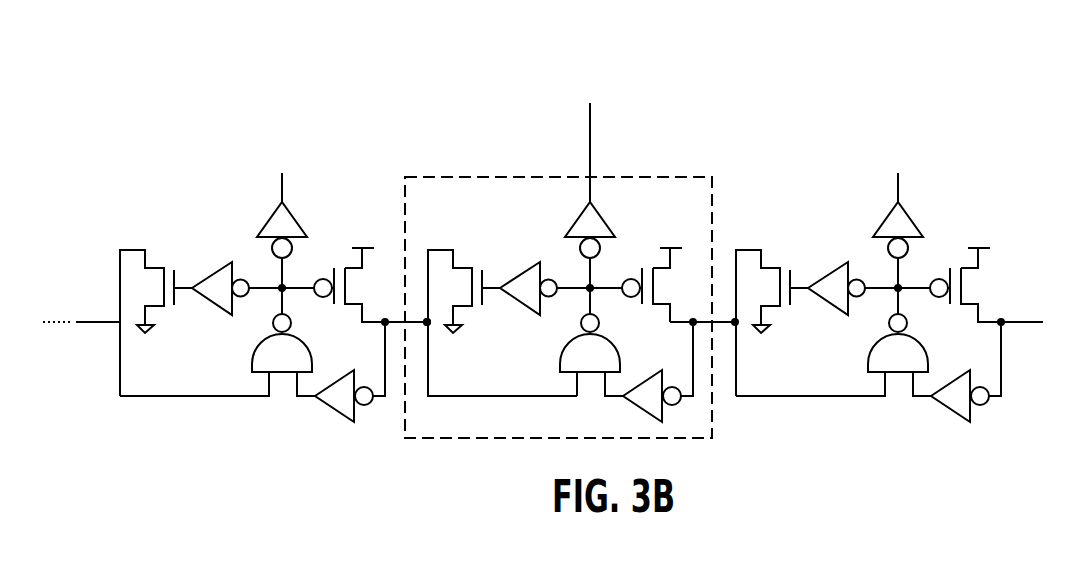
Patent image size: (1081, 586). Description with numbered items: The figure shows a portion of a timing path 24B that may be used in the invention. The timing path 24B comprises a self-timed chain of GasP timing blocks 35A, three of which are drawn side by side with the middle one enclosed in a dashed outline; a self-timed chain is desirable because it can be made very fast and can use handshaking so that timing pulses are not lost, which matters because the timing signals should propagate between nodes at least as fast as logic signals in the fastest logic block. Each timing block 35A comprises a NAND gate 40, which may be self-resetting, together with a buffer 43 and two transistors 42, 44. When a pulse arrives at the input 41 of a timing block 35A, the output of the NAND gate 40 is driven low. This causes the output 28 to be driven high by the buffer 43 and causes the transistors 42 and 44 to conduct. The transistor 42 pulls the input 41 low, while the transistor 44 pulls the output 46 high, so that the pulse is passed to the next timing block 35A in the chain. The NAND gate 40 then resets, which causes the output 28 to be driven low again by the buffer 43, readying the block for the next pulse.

The timing path 24B is at (508, 68).
The output 28 is at (590, 112).
The timing block 35A is at (660, 177).
The transistor 42 is at (460, 262).
The buffer 43 is at (585, 203).
The transistor 44 is at (660, 258).
The NAND gate 40 is at (572, 350).
The input 41 is at (428, 323).
The output 46 is at (693, 323).